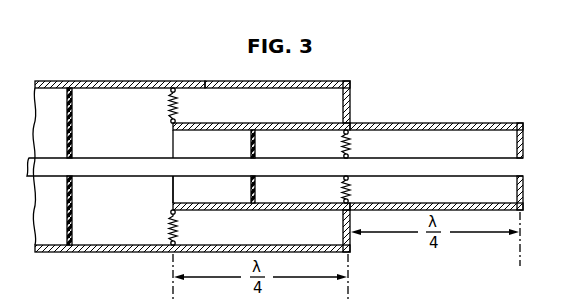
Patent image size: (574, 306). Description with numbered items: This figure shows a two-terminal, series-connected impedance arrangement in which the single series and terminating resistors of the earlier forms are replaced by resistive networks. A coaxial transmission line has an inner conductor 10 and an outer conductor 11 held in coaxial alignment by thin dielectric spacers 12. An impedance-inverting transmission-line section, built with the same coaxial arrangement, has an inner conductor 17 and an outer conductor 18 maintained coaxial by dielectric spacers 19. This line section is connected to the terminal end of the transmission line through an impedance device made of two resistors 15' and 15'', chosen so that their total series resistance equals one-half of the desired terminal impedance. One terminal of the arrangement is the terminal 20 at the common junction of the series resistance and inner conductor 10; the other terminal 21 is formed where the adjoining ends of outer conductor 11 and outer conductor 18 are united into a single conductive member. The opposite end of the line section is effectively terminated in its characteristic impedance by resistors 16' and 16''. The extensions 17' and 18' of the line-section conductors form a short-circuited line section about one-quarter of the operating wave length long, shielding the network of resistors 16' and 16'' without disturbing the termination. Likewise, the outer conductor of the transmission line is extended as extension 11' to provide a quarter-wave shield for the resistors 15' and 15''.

The inner conductor 10 is at (137, 158).
The outer conductor 11 is at (191, 158).
The outer conductor extension 11' is at (277, 158).
The dielectric spacers 12 is at (72, 108).
The resistor 15' is at (191, 108).
The resistor 15'' is at (193, 227).
The resistor 16' is at (364, 144).
The resistor 16'' is at (366, 189).
The inner conductor 17 is at (261, 193).
The inner conductor extension 17' is at (436, 175).
The outer conductor 18 is at (261, 130).
The outer conductor extension 18' is at (436, 130).
The dielectric spacers 19 is at (255, 144).
The terminal 20 is at (169, 179).
The terminal 21 is at (171, 92).